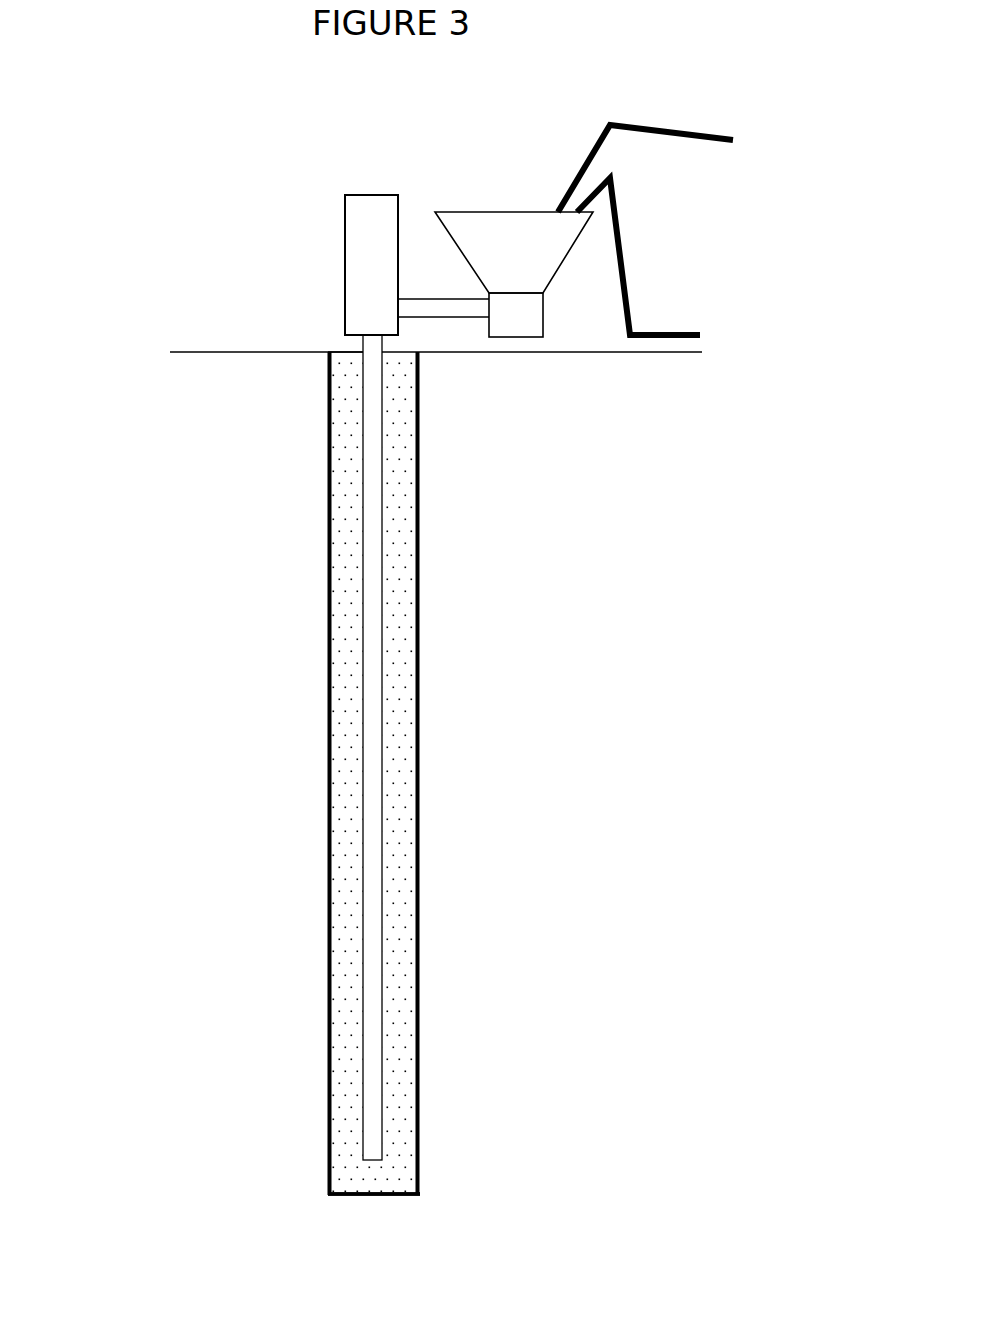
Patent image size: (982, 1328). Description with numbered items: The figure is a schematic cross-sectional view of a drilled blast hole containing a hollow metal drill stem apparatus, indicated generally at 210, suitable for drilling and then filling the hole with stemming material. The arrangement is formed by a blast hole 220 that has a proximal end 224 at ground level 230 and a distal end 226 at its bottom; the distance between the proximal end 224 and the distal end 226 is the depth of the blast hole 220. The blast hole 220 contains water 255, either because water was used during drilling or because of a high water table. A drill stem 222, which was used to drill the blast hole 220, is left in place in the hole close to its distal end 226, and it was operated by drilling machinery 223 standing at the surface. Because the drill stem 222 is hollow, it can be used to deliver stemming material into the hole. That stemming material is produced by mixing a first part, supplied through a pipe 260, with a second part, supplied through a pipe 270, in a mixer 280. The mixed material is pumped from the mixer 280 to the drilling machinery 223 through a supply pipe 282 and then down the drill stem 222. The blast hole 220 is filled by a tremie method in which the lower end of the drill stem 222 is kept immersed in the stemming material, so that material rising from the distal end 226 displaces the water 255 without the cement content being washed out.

The drilled blast hole containing a hollow metal drill stem apparatus 210 is at (258, 655).
The blast hole 220 is at (420, 842).
The drill stem 222 is at (382, 668).
The drilling machinery 223 is at (345, 282).
The proximal end 224 is at (327, 353).
The distal end 226 is at (363, 1193).
The ground level 230 is at (257, 353).
The water 255 is at (347, 650).
The pipe 260 is at (715, 135).
The pipe 270 is at (630, 280).
The mixer 280 is at (525, 248).
The supply pipe 282 is at (433, 298).